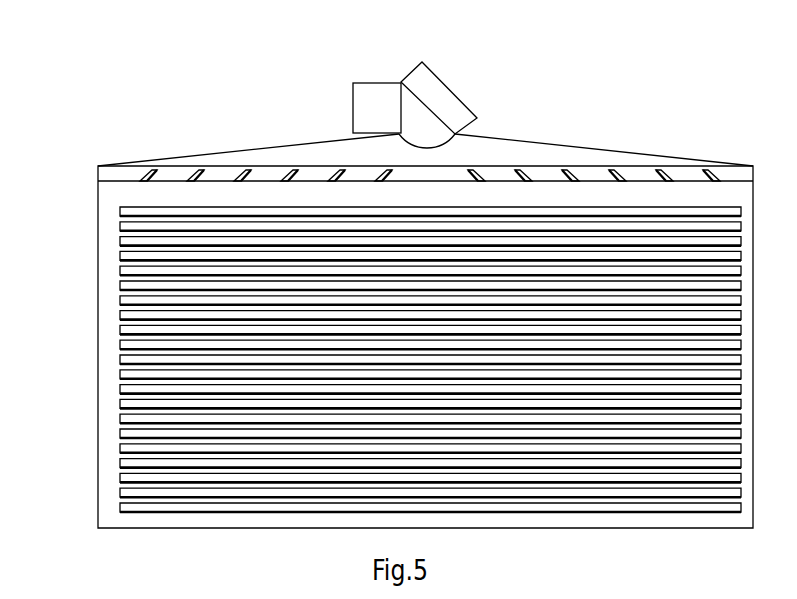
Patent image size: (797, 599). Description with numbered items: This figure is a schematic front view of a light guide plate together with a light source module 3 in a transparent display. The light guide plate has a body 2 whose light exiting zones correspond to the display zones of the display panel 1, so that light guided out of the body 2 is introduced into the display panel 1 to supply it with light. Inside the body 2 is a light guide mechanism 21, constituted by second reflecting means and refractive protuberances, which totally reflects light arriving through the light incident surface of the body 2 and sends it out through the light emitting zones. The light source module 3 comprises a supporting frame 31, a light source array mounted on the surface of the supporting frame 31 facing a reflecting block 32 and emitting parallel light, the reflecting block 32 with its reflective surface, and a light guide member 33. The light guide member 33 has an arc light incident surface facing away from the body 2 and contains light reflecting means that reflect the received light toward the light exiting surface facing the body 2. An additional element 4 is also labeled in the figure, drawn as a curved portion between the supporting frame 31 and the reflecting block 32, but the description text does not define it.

The display panel 1 is at (267, 151).
The body 2 is at (112, 230).
The light guide mechanism 21 is at (122, 284).
The light source module 3 is at (150, 173).
The supporting frame 31 is at (373, 91).
The reflecting block 32 is at (421, 84).
The light guide member 33 is at (234, 91).
The curved connector 4 is at (427, 143).